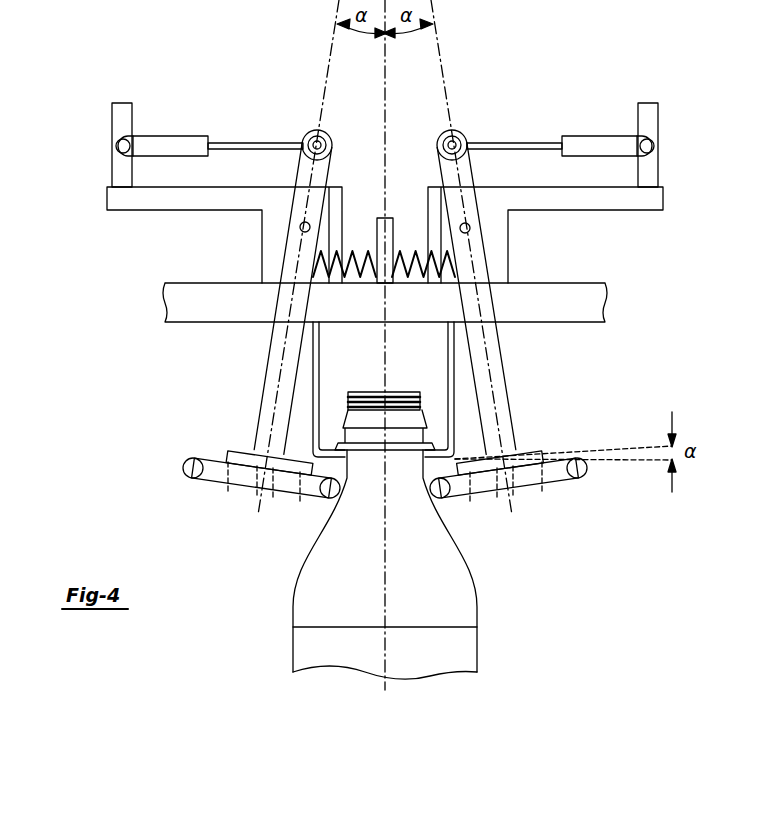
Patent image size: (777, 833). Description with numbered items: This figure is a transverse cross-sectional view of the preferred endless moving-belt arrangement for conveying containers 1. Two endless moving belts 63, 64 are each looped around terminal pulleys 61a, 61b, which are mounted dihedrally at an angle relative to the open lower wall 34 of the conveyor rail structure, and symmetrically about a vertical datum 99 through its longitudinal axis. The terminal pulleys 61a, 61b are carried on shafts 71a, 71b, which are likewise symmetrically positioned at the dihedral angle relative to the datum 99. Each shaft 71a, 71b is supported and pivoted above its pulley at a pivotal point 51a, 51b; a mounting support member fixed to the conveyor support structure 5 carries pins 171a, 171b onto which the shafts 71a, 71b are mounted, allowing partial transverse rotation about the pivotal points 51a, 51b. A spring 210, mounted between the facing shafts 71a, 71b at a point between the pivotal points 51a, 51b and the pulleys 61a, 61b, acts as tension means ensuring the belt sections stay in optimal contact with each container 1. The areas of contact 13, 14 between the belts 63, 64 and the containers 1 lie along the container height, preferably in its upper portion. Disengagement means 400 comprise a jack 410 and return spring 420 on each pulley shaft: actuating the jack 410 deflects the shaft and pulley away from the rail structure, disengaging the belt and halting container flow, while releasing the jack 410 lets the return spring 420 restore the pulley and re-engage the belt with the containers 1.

The container 1 is at (458, 641).
The conveyor support structure 5 is at (172, 296).
The area of contact 13 is at (342, 496).
The area of contact 14 is at (425, 492).
The open lower wall 34 is at (437, 452).
The pivotal point 51a is at (300, 230).
The pivotal point 51b is at (470, 229).
The terminal pulley 61a is at (238, 477).
The terminal pulley 61b is at (530, 480).
The endless moving belt 63 is at (330, 493).
The endless moving belt 64 is at (445, 493).
The shaft 71a is at (268, 410).
The shaft 71b is at (502, 386).
The vertical datum 99 is at (385, 649).
The pin 171a is at (302, 223).
The pin 171b is at (466, 223).
The spring 210 is at (357, 250).
The disengagement means 400 is at (188, 140).
The jack 410 is at (277, 101).
The return spring 420 is at (318, 268).